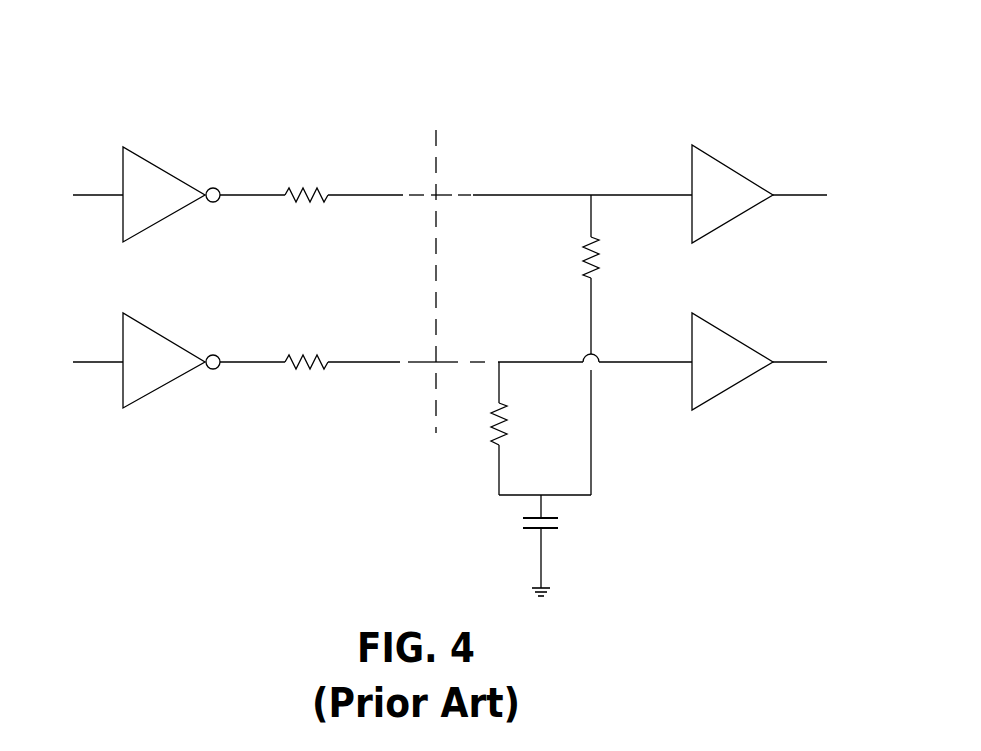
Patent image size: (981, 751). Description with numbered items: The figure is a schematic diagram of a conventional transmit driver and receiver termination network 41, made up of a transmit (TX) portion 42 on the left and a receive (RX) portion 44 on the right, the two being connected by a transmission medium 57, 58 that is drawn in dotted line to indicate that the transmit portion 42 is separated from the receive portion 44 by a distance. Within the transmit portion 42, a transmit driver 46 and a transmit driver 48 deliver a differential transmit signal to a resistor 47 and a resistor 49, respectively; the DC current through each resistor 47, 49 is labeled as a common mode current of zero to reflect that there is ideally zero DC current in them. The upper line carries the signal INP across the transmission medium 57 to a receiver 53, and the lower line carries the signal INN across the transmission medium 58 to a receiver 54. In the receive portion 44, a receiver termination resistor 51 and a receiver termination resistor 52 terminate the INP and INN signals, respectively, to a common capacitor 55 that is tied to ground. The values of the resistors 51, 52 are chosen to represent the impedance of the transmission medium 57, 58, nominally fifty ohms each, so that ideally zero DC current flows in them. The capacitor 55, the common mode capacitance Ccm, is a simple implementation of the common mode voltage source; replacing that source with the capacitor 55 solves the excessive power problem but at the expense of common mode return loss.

The network 41 is at (124, 35).
The transmit portion 42 is at (307, 77).
The receive portion 44 is at (534, 77).
The transmit driver 46 is at (140, 153).
The resistor 47 is at (303, 183).
The transmit driver 48 is at (143, 320).
The resistor 49 is at (307, 352).
The receiver termination resistor 51 is at (587, 265).
The receiver termination resistor 52 is at (504, 420).
The receiver 53 is at (718, 160).
The receiver 54 is at (718, 327).
The capacitor 55 is at (533, 530).
The transmission medium 57 is at (447, 197).
The transmission medium 58 is at (432, 360).